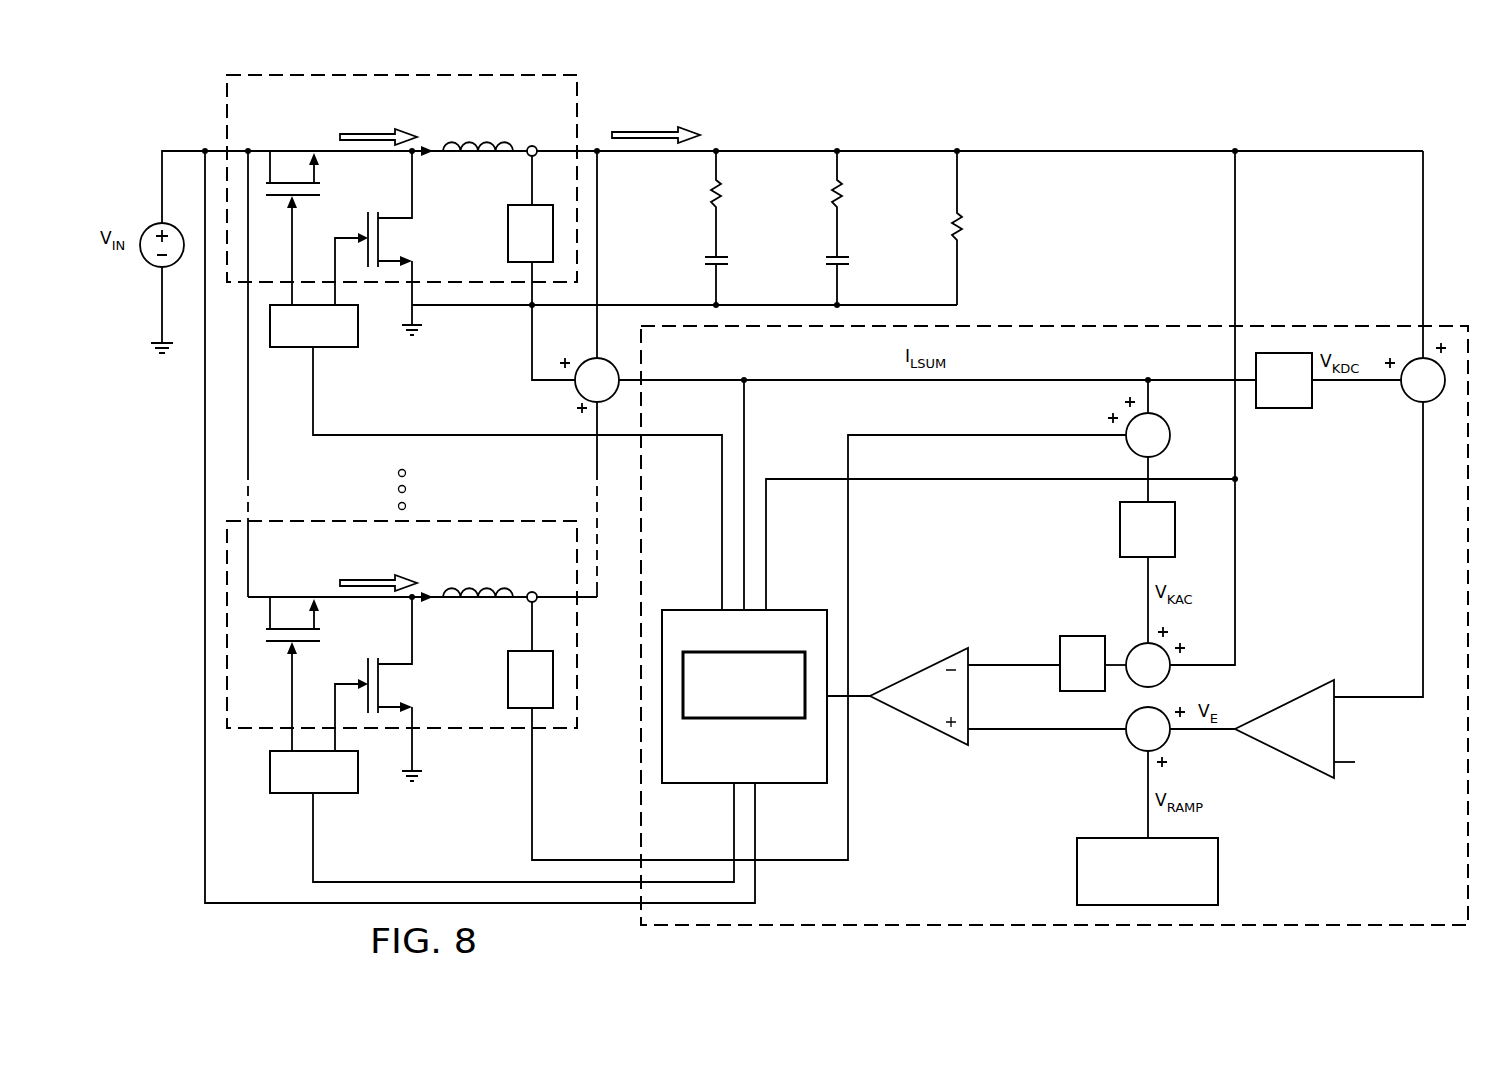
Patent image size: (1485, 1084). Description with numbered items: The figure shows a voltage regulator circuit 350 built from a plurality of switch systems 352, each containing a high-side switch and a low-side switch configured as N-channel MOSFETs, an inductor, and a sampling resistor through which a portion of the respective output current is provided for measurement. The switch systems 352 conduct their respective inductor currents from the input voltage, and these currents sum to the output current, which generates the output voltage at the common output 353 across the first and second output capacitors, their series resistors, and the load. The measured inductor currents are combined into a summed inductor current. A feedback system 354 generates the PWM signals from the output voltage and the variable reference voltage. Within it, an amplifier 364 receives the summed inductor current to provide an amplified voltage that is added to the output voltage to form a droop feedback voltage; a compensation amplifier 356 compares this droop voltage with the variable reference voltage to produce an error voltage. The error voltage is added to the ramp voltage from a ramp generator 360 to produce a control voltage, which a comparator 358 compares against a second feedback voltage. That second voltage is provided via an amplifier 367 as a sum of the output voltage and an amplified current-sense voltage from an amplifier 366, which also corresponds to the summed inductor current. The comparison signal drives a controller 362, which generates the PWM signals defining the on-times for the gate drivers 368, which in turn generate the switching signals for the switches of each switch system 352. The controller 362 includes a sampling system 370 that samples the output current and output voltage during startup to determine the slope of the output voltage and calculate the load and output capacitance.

The voltage regulator circuit 350 is at (938, 105).
The switch systems 352 is at (220, 112).
The common output 353 is at (1172, 126).
The feedback system 354 is at (1071, 317).
The compensation amplifier 356 is at (1283, 752).
The comparator 358 is at (917, 724).
The ramp generator 360 is at (1219, 870).
The controller 362 is at (775, 784).
The amplifier 364 is at (1283, 409).
The amplifier 366 is at (1118, 528).
The amplifier 367 is at (1082, 635).
The gate drivers 368 is at (297, 348).
The sampling system 370 is at (748, 719).